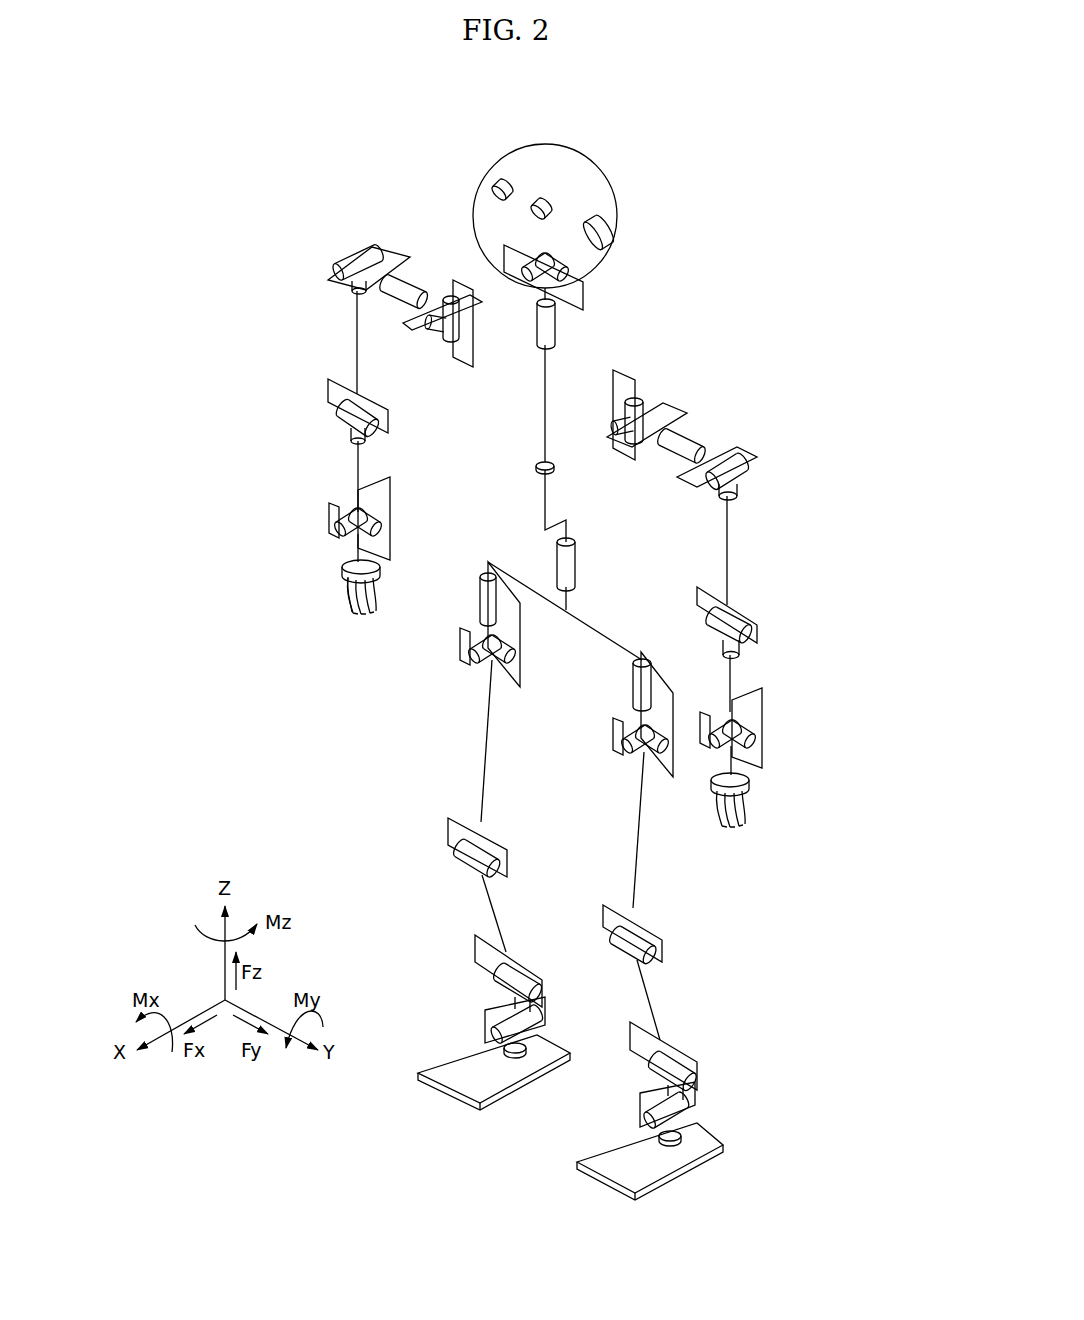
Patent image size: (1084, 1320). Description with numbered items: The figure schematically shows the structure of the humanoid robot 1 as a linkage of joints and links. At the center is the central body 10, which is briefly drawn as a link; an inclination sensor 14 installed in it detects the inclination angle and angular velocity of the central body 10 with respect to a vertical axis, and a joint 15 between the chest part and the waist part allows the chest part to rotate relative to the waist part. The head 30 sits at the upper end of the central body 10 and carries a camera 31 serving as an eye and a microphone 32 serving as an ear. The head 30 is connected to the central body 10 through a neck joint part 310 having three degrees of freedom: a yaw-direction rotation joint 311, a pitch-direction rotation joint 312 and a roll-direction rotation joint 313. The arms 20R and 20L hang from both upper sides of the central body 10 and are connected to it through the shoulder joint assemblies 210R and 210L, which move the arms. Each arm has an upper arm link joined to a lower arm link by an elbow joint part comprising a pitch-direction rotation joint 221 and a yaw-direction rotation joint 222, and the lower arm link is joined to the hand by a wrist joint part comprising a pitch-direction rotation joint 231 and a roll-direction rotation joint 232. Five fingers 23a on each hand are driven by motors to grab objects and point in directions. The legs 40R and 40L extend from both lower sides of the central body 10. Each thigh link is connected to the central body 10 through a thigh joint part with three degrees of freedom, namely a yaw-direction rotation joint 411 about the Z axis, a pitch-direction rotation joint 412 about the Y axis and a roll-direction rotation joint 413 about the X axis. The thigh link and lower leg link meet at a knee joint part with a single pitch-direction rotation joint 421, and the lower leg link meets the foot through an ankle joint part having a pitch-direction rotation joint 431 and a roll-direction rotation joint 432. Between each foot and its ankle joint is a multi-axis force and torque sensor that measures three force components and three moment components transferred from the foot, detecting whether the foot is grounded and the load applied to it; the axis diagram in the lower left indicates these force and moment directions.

The humanoid robot 1 is at (840, 167).
The central body 10 is at (544, 436).
The inclination sensor 14 is at (552, 470).
The joint 15 is at (575, 562).
The right arm 20R is at (258, 403).
The left arm 20L is at (815, 597).
The fingers 23a is at (350, 606).
The head 30 is at (610, 167).
The camera 31 is at (534, 216).
The microphone 32 is at (614, 231).
The right leg 40R is at (382, 793).
The left leg 40L is at (699, 880).
The right shoulder joint assembly 210R is at (357, 236).
The left shoulder joint assembly 210L is at (684, 397).
The pitch-direction rotation joint 221 is at (360, 412).
The yaw-direction rotation joint 222 is at (365, 440).
The pitch-direction rotation joint 231 is at (382, 530).
The roll-direction rotation joint 232 is at (377, 508).
The neck joint part 310 is at (604, 303).
The yaw-direction rotation joint 311 is at (553, 330).
The pitch-direction rotation joint 312 is at (580, 268).
The roll-direction rotation joint 313 is at (515, 270).
The yaw-direction rotation joint 411 is at (483, 598).
The pitch-direction rotation joint 412 is at (511, 657).
The roll-direction rotation joint 413 is at (471, 663).
The pitch-direction rotation joint 421 is at (477, 853).
The pitch-direction rotation joint 431 is at (541, 995).
The roll-direction rotation joint 432 is at (534, 1020).